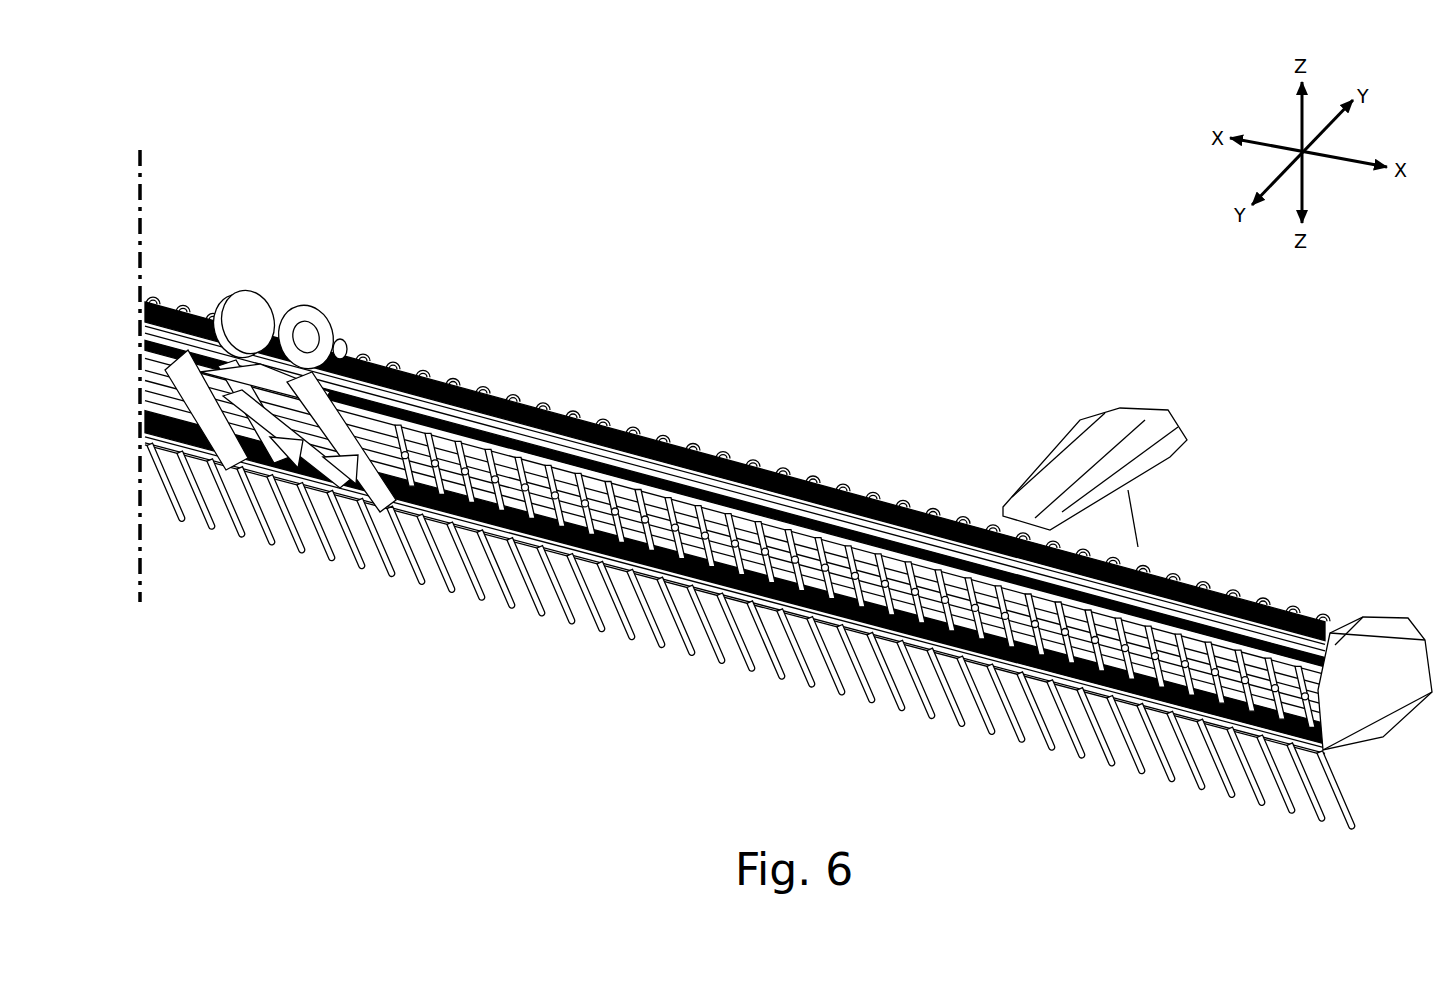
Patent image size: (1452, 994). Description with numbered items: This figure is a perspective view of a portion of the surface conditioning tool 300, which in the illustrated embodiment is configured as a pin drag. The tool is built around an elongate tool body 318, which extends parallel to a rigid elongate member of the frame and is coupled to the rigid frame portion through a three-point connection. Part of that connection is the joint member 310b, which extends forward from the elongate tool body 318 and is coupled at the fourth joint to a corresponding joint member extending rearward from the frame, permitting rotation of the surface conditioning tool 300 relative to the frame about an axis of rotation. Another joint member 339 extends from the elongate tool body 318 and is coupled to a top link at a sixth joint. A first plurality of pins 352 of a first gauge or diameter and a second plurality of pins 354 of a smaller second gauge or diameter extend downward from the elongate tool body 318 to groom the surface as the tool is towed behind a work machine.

The surface conditioning tool 300 is at (950, 226).
The joint member 339 is at (320, 310).
The first plurality of pins 352 is at (453, 583).
The second plurality of pins 354 is at (637, 642).
The joint member 310b is at (1180, 458).
The elongate tool body 318 is at (1357, 630).